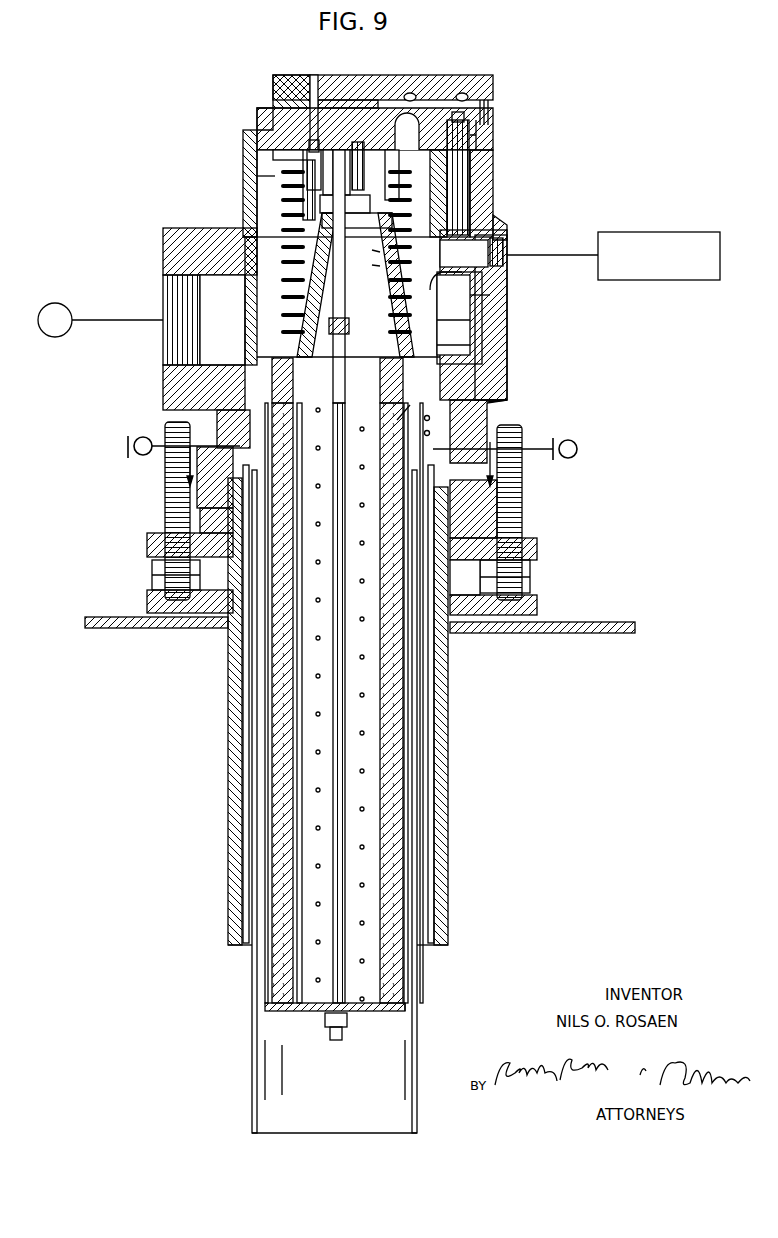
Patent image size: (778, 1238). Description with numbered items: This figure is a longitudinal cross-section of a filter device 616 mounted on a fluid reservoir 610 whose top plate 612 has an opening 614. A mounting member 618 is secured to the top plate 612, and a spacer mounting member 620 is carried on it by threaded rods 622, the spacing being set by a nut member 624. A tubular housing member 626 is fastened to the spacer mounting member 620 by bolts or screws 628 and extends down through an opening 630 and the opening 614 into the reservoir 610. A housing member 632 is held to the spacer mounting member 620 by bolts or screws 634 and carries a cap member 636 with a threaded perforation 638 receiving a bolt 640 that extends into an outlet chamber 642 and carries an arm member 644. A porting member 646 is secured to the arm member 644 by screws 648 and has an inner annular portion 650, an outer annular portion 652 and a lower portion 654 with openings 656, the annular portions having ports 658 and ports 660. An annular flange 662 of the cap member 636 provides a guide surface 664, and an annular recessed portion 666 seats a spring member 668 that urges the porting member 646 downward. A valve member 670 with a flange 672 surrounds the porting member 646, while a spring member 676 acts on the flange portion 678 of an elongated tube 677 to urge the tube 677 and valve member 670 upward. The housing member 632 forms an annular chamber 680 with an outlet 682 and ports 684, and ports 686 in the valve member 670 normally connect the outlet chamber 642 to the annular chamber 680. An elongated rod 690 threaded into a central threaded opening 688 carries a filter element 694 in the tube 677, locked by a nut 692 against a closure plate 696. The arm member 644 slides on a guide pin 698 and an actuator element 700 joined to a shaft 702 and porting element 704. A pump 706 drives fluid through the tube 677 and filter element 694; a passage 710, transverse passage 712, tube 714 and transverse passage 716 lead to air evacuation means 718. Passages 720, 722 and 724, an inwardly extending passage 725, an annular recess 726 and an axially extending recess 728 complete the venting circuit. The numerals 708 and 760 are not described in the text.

The fluid reservoir 610 is at (590, 712).
The top plate 612 is at (599, 623).
The opening 614 is at (450, 652).
The filter device 616 is at (508, 375).
The mounting member 618 is at (540, 606).
The spacer mounting member 620 is at (538, 549).
The threaded rods 622 is at (166, 466).
The nut member 624 is at (152, 588).
The tubular housing member 626 is at (448, 742).
The bolts or screws 628 is at (200, 521).
The opening 630 is at (466, 577).
The housing member 632 is at (500, 316).
The bolts or screws 634 is at (165, 492).
The cap member 636 is at (386, 76).
The threaded perforation 638 is at (327, 161).
The bolt 640 is at (365, 165).
The outlet chamber 642 is at (470, 182).
The arm member 644 is at (359, 175).
The porting member 646 is at (390, 261).
The screws 648 is at (328, 175).
The inner annular portion 650 is at (390, 243).
The outer annular portion 652 is at (255, 226).
The lower portion 654 is at (454, 325).
The openings 656 is at (348, 380).
The ports 658 is at (341, 286).
The ports 660 is at (340, 252).
The annular flange 662 is at (258, 176).
The guide surface 664 is at (246, 196).
The annular recessed portion 666 is at (258, 131).
The spring member 668 is at (273, 156).
The valve member 670 is at (246, 337).
The flange 672 is at (381, 409).
The spring member 676 is at (427, 424).
The elongated tube 677 is at (430, 824).
The flange portion 678 is at (240, 429).
The annular chamber 680 is at (470, 290).
The outlet 682 is at (170, 364).
The ports 684 is at (232, 354).
The ports 686 is at (454, 315).
The central threaded opening 688 is at (355, 276).
The elongated rod 690 is at (343, 874).
The nut 692 is at (348, 1026).
The filter element 694 is at (408, 995).
The closure plate 696 is at (390, 1012).
The guide pin 698 is at (450, 122).
The actuator element 700 is at (296, 190).
The shaft 702 is at (276, 94).
The porting element 704 is at (314, 76).
The pump 706 is at (62, 308).
The cavity 708 is at (464, 254).
The passage 710 is at (405, 128).
The transverse passage 712 is at (488, 104).
The tube 714 is at (478, 138).
The transverse passage 716 is at (500, 256).
The air evacuation means 718 is at (682, 232).
The radially extending passage 720 is at (500, 393).
The axially extending passage 722 is at (488, 344).
The radially inwardly extending passage 724 is at (470, 300).
The inwardly extending passage 725 is at (500, 222).
The annular recess 726 is at (460, 205).
The axially extending recess 728 is at (244, 258).
The pin 760 is at (404, 214).